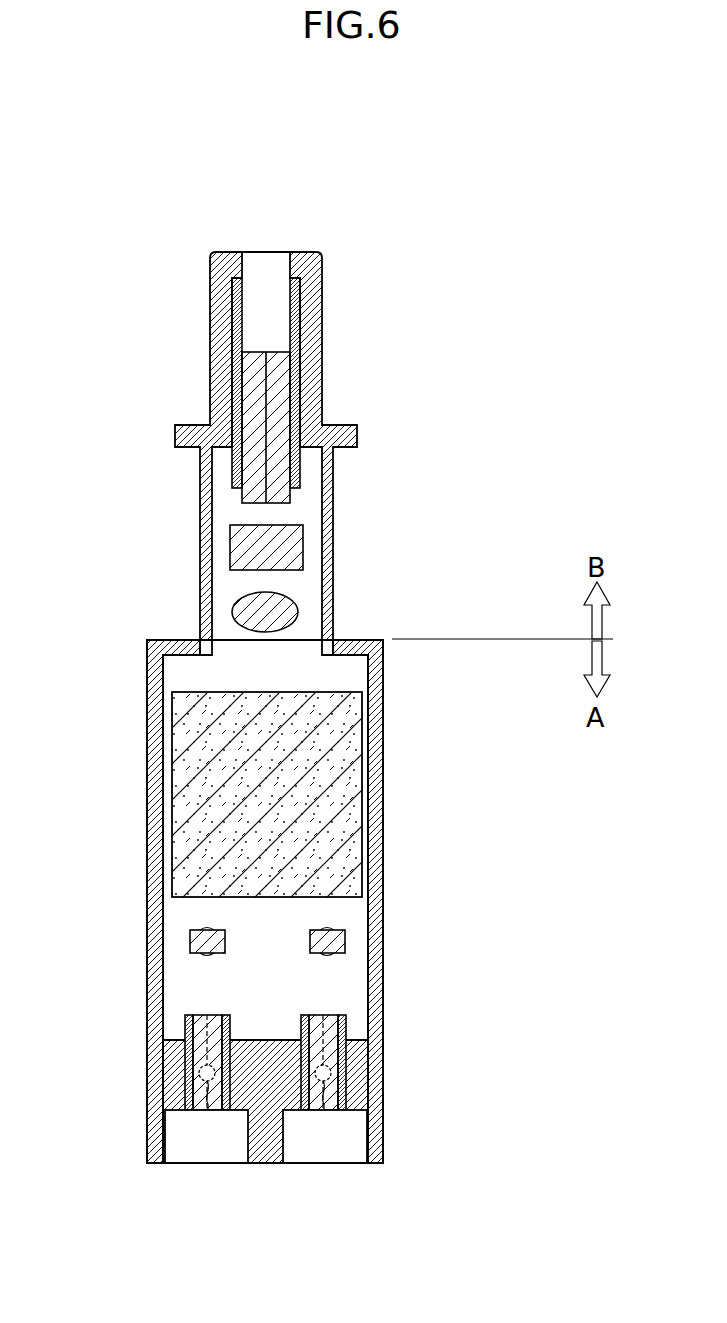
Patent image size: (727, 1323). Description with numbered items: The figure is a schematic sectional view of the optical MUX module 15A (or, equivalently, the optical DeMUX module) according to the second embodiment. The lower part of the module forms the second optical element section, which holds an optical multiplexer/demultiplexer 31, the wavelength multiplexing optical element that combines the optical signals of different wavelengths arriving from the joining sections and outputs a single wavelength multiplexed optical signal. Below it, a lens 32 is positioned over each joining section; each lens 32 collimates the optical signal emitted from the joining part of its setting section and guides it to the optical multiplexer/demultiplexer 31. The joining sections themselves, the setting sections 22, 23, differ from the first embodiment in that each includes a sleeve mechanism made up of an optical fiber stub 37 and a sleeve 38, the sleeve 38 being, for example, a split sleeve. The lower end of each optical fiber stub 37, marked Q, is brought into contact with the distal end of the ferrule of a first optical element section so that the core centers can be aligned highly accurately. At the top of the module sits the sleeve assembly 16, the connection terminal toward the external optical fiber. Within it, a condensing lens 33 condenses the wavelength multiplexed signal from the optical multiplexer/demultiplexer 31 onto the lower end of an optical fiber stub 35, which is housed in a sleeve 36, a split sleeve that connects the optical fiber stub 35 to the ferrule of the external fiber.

The optical MUX module 15A is at (387, 228).
The sleeve assembly 16 is at (148, 253).
The sleeve 36 is at (295, 322).
The optical fiber stub 35 is at (298, 490).
The condensing lens 33 is at (285, 605).
The optical multiplexer/demultiplexer 31 is at (355, 775).
The lens 32 is at (190, 940).
The optical fiber stub 37 is at (192, 1030).
The sleeve 38 is at (188, 1080).
The setting section 23 is at (185, 1140).
The setting section 22 is at (352, 1140).